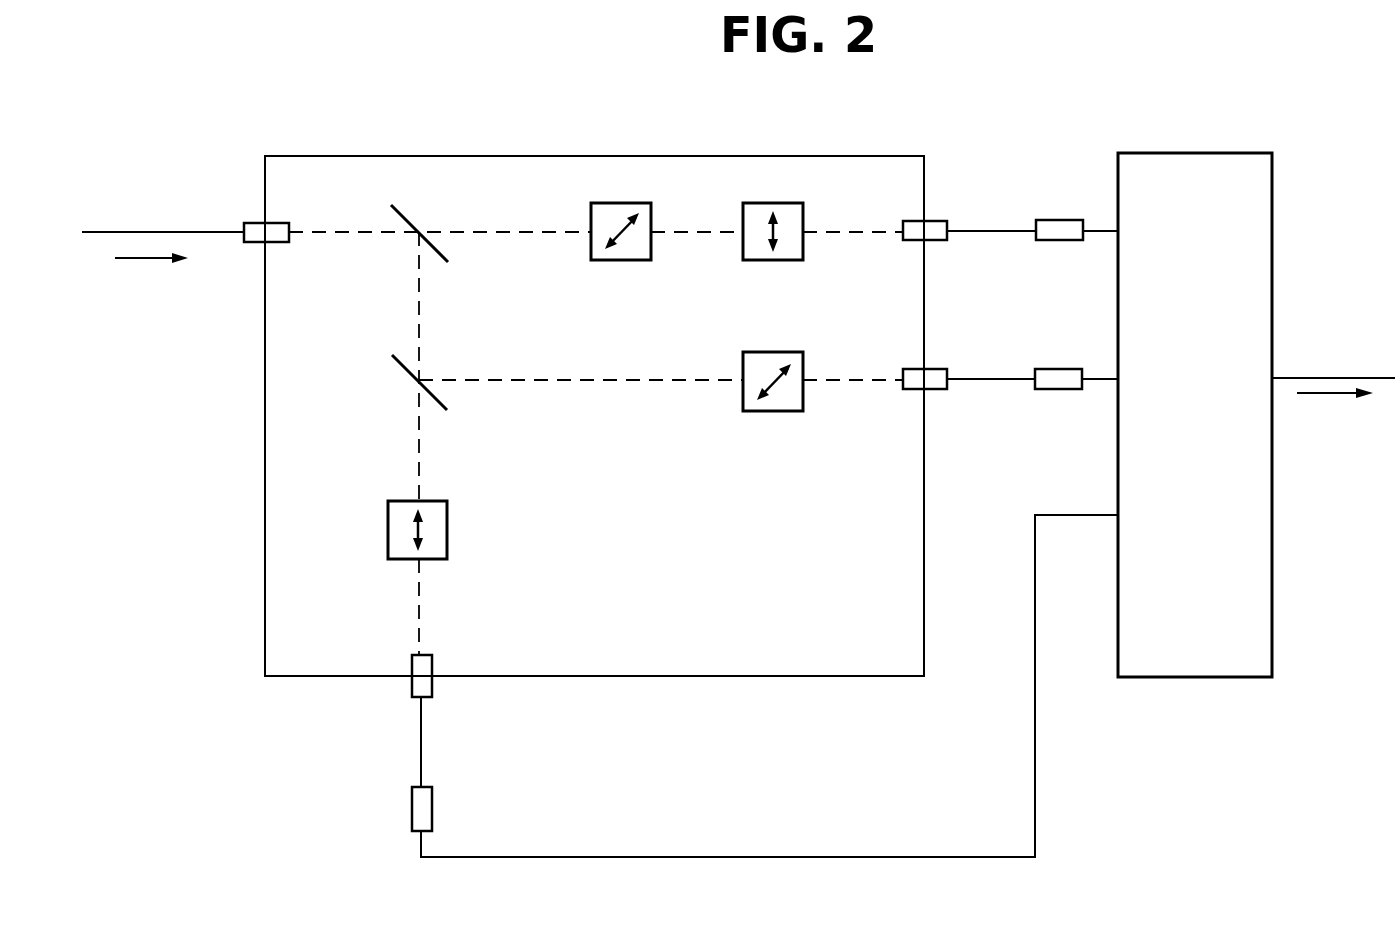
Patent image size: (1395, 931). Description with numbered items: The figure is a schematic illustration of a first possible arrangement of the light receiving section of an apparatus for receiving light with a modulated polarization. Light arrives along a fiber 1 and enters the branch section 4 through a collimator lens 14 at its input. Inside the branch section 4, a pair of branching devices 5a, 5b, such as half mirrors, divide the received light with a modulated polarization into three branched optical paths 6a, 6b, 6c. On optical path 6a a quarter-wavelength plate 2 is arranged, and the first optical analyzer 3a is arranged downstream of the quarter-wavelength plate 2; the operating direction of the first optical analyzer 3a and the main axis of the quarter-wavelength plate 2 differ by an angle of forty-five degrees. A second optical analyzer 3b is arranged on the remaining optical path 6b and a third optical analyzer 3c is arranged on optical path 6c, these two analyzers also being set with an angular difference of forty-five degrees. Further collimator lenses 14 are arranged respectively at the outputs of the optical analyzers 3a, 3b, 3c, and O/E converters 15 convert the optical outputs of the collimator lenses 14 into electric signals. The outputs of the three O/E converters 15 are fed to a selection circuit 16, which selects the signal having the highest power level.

The fiber 1 is at (103, 231).
The quarter-wavelength plate 2 is at (607, 262).
The first optical analyzer 3a is at (742, 227).
The second optical analyzer 3b is at (743, 398).
The third optical analyzer 3c is at (447, 533).
The branch section 4 is at (350, 157).
The branching device 5a is at (412, 218).
The branching device 5b is at (407, 368).
The branched optical path 6a is at (515, 233).
The branched optical path 6b is at (513, 383).
The branched optical path 6c is at (418, 447).
The collimator lens 14 is at (247, 243).
The O/E converter 15 is at (1055, 242).
The selection circuit 16 is at (1208, 678).